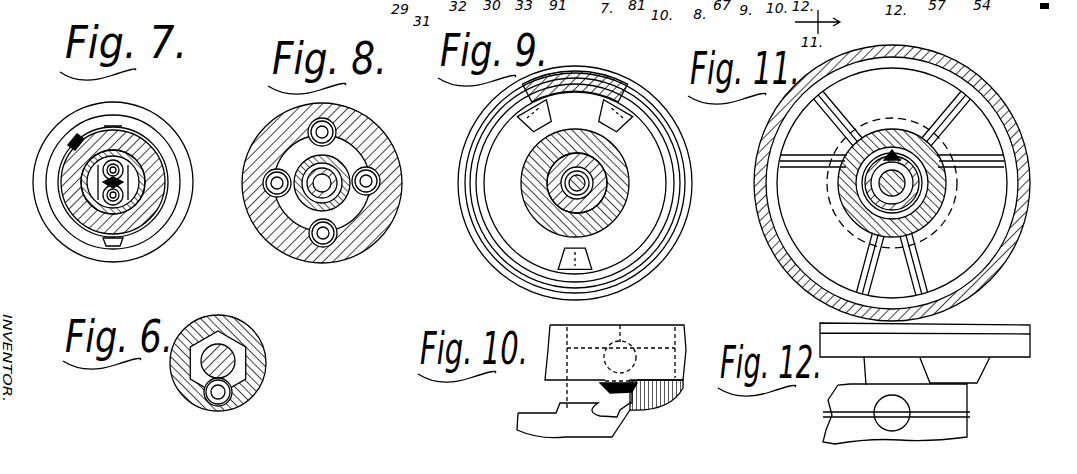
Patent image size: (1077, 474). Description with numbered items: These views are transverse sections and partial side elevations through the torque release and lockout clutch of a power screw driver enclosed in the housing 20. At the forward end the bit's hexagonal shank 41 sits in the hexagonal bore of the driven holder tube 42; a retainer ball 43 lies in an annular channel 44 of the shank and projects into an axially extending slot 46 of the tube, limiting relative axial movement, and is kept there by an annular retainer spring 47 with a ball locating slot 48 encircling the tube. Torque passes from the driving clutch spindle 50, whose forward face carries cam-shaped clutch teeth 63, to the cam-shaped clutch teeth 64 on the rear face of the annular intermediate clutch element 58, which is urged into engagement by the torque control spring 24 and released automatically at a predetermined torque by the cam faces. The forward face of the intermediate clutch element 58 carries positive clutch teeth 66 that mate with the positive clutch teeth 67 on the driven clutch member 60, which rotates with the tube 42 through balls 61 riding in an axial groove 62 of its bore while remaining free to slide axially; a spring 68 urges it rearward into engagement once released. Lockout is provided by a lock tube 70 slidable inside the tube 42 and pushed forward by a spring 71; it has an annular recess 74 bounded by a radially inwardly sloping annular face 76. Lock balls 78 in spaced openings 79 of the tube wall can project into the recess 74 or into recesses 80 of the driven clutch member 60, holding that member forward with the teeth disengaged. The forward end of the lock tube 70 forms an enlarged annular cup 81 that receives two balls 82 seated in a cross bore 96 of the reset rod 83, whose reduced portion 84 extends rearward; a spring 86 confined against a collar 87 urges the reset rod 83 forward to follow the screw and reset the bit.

In FIG. 11, the housing 20 is at (786, 255).
In FIG. 9, the torque control spring 24 is at (590, 72).
In FIG. 6, the hexagonal shank 41 is at (205, 366).
In FIG. 7, the driven holder tube 42 is at (160, 157).
In FIG. 8, the driven holder tube 42 is at (305, 140).
In FIG. 9, the driven holder tube 42 is at (536, 204).
In FIG. 11, the driven holder tube 42 is at (930, 190).
In FIG. 6, the driven holder tube 42 is at (262, 362).
In FIG. 10, the driven holder tube 42 is at (572, 388).
In FIG. 6, the retainer ball 43 is at (220, 401).
In FIG. 6, the annular channel 44 is at (240, 331).
In FIG. 6, the axially extending slot 46 is at (262, 396).
In FIG. 6, the annular retainer spring 47 is at (218, 320).
In FIG. 6, the ball locating slot 48 is at (205, 405).
In FIG. 11, the driving clutch spindle 50 is at (935, 96).
In FIG. 12, the driving clutch spindle 50 is at (948, 403).
In FIG. 9, the intermediate clutch element 58 is at (535, 118).
In FIG. 10, the intermediate clutch element 58 is at (535, 426).
In FIG. 12, the intermediate clutch element 58 is at (1032, 342).
In FIG. 7, the driven clutch member 60 is at (165, 240).
In FIG. 8, the driven clutch member 60 is at (378, 136).
In FIG. 10, the driven clutch member 60 is at (665, 324).
In FIG. 7, the balls 61 is at (100, 120).
In FIG. 8, the balls 61 is at (326, 124).
In FIG. 7, the axial groove 62 is at (117, 250).
In FIG. 8, the axial groove 62 is at (360, 140).
In FIG. 11, the cam-shaped clutch teeth 63 is at (975, 126).
In FIG. 12, the cam-shaped clutch teeth 63 is at (864, 366).
In FIG. 12, the cam-shaped clutch teeth 64 is at (978, 373).
In FIG. 9, the positive clutch teeth 66 is at (640, 151).
In FIG. 10, the positive clutch teeth 66 is at (625, 426).
In FIG. 10, the positive clutch teeth 67 is at (660, 401).
In FIG. 7, the spring 68 is at (72, 142).
In FIG. 8, the lock tube 70 is at (348, 200).
In FIG. 9, the lock tube 70 is at (556, 220).
In FIG. 11, the lock tube 70 is at (880, 200).
In FIG. 11, the spring 71 is at (898, 146).
In FIG. 8, the annular recess 74 is at (300, 241).
In FIG. 8, the radially inwardly sloping annular face 76 is at (342, 206).
In FIG. 8, the lock balls 78 is at (262, 185).
In FIG. 10, the lock balls 78 is at (621, 340).
In FIG. 8, the spaced openings 79 is at (376, 173).
In FIG. 8, the recesses 80 is at (284, 175).
In FIG. 7, the enlarged annular cup 81 is at (140, 168).
In FIG. 7, the balls 82 is at (150, 188).
In FIG. 7, the reset rod 83 is at (100, 212).
In FIG. 8, the reduced portion 84 is at (290, 214).
In FIG. 9, the reduced portion 84 is at (590, 183).
In FIG. 11, the reduced portion 84 is at (905, 200).
In FIG. 11, the spring 86 is at (858, 184).
In FIG. 9, the collar 87 is at (596, 214).
In FIG. 7, the cross bore 96 is at (92, 181).